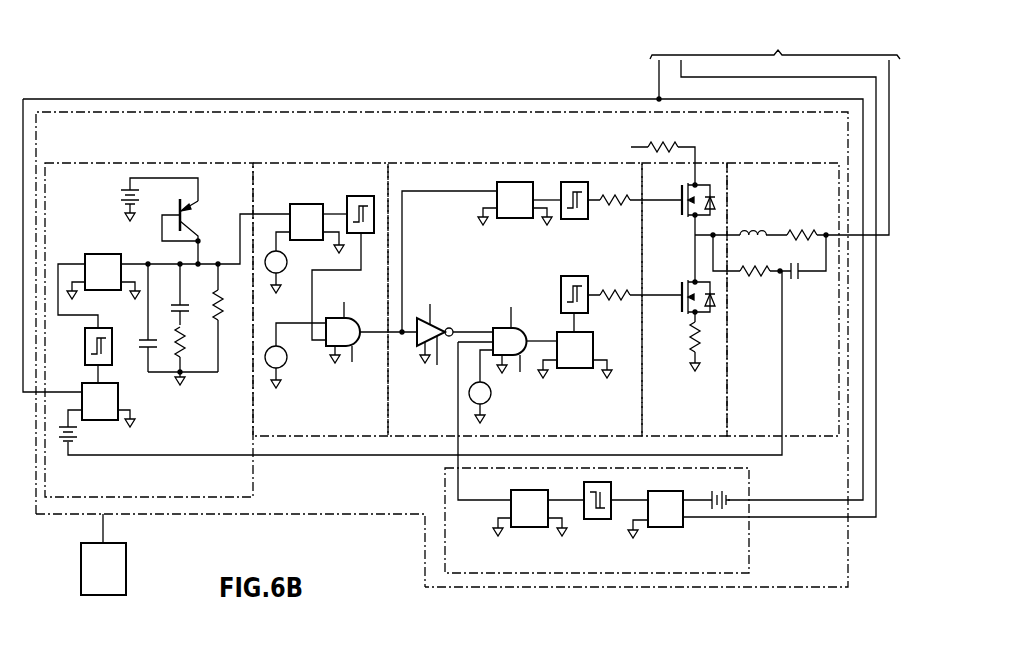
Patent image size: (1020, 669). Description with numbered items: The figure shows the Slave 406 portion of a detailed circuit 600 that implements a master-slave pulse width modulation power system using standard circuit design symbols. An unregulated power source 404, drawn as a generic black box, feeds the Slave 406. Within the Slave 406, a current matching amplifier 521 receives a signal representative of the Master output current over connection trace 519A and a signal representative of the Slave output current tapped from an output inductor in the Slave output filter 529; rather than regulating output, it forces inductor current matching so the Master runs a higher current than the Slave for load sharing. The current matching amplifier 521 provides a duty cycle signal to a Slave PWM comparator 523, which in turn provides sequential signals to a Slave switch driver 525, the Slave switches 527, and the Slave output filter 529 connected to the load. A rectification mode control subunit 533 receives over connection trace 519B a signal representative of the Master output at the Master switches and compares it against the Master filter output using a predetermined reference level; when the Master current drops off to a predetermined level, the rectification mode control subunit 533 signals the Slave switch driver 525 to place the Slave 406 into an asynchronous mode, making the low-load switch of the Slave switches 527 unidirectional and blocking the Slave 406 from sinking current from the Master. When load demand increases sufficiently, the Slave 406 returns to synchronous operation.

The detailed circuit 600 is at (95, 70).
The connection trace 519A is at (605, 98).
The connection trace 519B is at (862, 139).
The current matching amplifier 521 is at (148, 163).
The Slave PWM comparator 523 is at (316, 163).
The Slave switch driver 525 is at (535, 163).
The Slave switches 527 is at (710, 163).
The Slave output filter 529 is at (769, 163).
The rectification mode control subunit 533 is at (750, 544).
The unregulated power source 404 is at (90, 581).
The Slave 406 is at (335, 515).